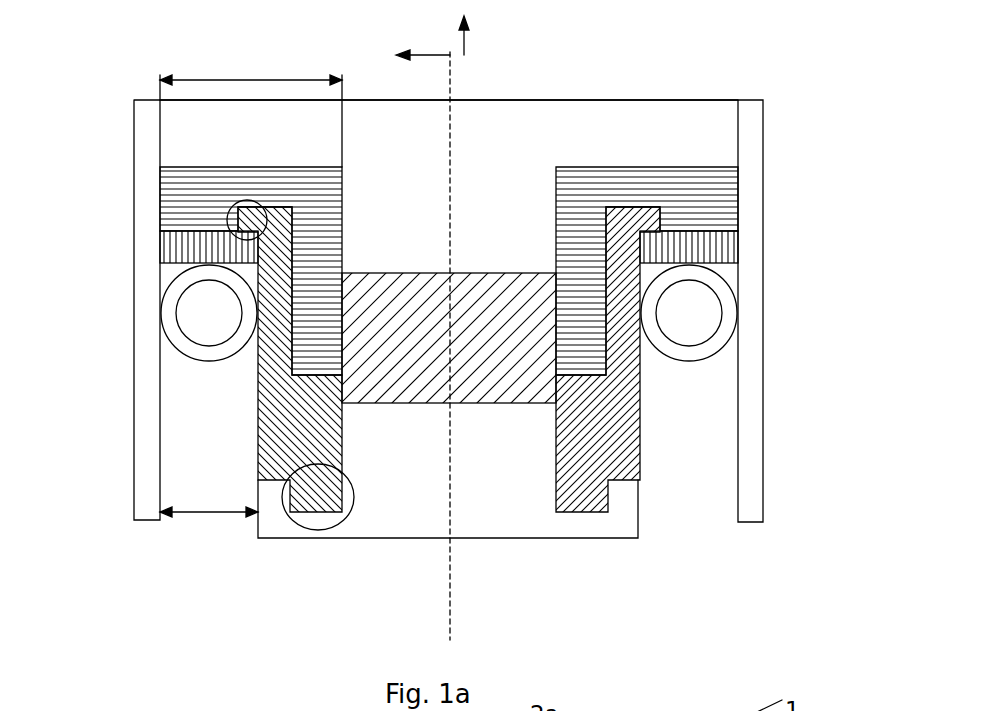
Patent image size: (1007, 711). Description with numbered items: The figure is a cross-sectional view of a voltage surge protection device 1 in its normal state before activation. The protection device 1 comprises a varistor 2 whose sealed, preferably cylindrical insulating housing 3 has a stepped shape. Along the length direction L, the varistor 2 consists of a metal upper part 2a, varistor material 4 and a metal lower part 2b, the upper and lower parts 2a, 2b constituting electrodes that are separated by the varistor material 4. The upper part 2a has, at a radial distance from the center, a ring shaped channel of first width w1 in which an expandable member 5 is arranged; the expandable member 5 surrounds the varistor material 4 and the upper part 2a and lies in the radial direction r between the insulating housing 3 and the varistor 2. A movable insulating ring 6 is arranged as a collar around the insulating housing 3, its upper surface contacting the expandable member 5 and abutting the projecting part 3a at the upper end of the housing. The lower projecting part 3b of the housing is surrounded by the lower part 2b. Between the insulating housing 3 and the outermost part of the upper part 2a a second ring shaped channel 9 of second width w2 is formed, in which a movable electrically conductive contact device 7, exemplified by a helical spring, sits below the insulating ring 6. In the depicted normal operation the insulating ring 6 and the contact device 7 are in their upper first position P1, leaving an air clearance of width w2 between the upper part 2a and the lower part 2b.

The voltage surge protection device 1 is at (706, 44).
The varistor 2 is at (752, 517).
The upper part 2a is at (497, 112).
The lower part 2b is at (418, 538).
The insulating housing 3 is at (260, 432).
The projecting part 3a is at (248, 206).
The lower projecting part 3b is at (328, 515).
The varistor material 4 is at (414, 278).
The expandable member 5 is at (343, 236).
The insulating ring 6 is at (165, 254).
The contact device 7 is at (178, 336).
The second channel 9 is at (210, 533).
The first position P1 is at (170, 300).
The first width w1 is at (251, 109).
The second width w2 is at (209, 500).
The length direction L is at (472, 31).
The radial direction r is at (414, 55).